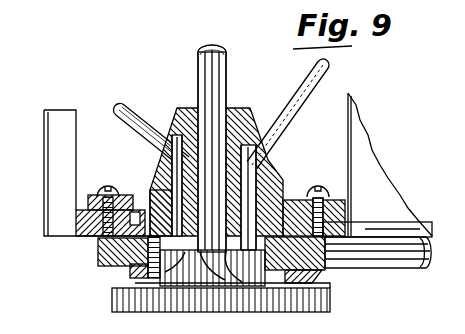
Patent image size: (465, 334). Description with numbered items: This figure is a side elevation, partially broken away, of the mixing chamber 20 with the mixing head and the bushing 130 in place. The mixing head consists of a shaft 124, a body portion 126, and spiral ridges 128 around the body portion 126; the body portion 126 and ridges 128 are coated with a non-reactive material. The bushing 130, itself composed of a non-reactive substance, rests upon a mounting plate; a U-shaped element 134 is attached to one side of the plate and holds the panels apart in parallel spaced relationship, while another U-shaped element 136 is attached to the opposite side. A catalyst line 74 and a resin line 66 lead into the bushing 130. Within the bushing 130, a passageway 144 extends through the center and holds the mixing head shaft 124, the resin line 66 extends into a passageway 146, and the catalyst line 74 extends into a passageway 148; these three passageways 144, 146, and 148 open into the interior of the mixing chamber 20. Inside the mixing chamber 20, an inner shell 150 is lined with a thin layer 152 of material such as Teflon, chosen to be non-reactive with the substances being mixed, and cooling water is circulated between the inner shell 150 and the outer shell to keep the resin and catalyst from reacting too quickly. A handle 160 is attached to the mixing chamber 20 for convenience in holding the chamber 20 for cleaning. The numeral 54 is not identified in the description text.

The housing 54 is at (11, 25).
The U-shaped element 136 is at (70, 97).
The shaft 124 is at (200, 65).
The passageway 144 is at (178, 136).
The catalyst line 74 is at (122, 132).
The passageway 148 is at (150, 180).
The bushing 130 is at (250, 118).
The resin line 66 is at (332, 70).
The passageway 146 is at (298, 185).
The U-shaped element 134 is at (410, 222).
The thin layer 152 is at (118, 255).
The body portion 126 is at (130, 275).
The spiral ridges 128 is at (237, 272).
The inner shell 150 is at (302, 279).
The handle 160 is at (397, 260).
The mixing chamber 20 is at (325, 308).